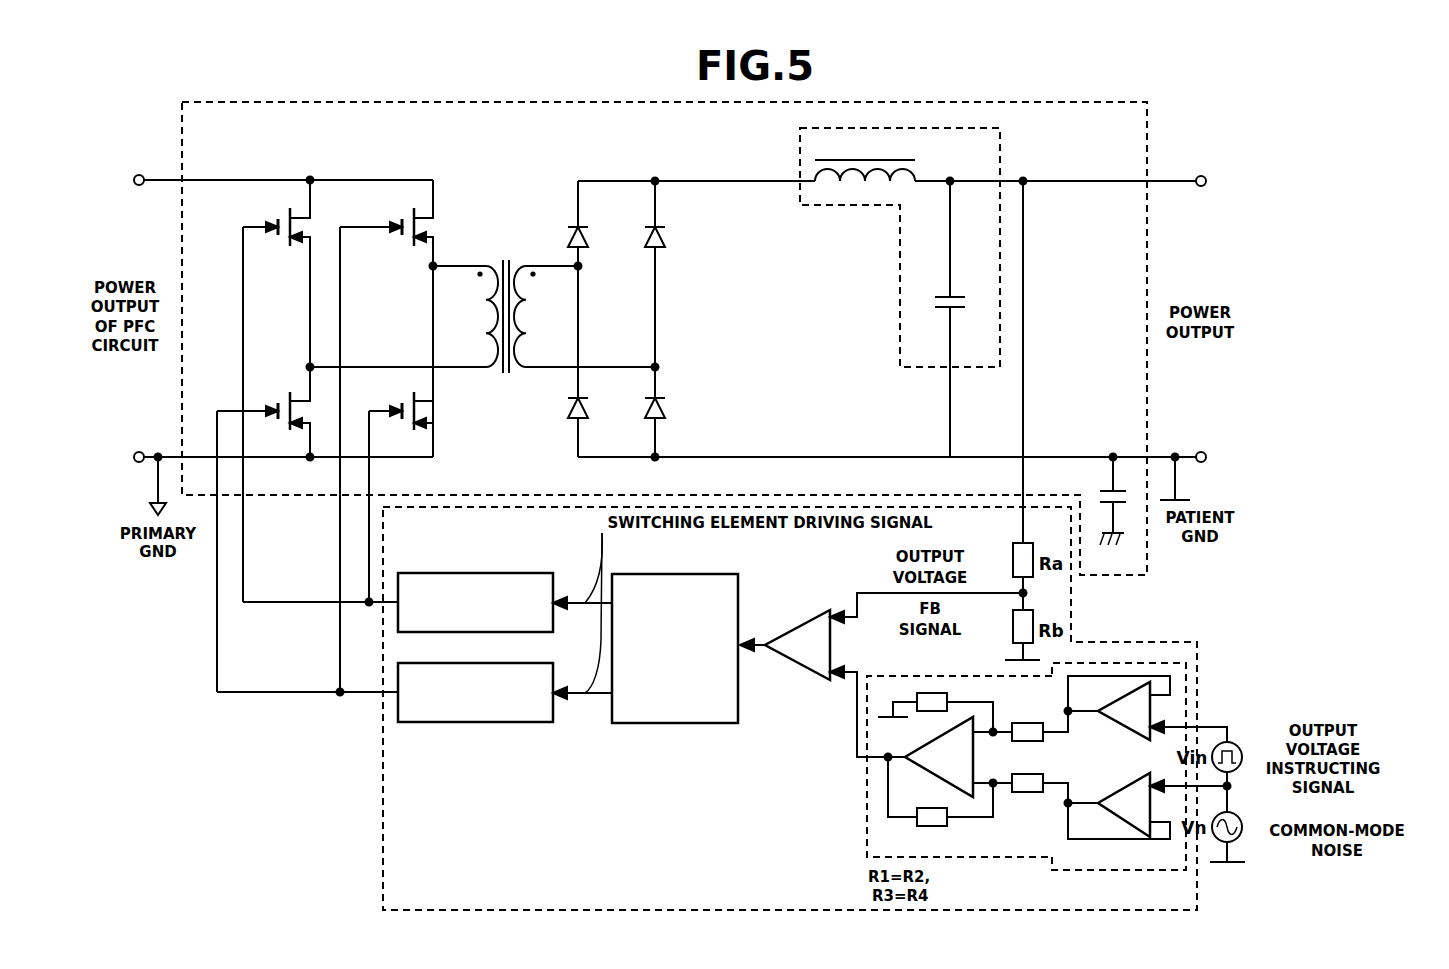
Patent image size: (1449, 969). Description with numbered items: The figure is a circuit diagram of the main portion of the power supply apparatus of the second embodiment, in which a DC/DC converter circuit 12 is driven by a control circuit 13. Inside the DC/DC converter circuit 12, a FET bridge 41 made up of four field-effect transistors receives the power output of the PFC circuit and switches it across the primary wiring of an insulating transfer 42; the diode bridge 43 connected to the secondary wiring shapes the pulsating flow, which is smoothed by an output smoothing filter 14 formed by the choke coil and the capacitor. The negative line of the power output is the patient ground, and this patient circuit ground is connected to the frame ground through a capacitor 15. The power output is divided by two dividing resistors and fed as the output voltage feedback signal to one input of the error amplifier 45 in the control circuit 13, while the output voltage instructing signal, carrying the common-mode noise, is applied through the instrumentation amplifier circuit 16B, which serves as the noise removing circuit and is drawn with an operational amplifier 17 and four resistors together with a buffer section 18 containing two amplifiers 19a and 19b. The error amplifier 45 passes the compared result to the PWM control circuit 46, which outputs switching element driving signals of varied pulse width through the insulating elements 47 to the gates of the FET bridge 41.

The DC/DC converter circuit 12 is at (1148, 146).
The control circuit 13 is at (382, 760).
The output smoothing filter 14 is at (900, 268).
The capacitor 15 is at (1108, 489).
The instrumentation amplifier circuit 16B is at (866, 780).
The operational amplifier 17 is at (976, 765).
The buffer amplifier circuit 18 is at (998, 821).
The buffer operational amplifier 19a is at (1120, 729).
The buffer operational amplifier 19b is at (1120, 788).
The FET bridge 41 is at (433, 168).
The insulating transfer 42 is at (510, 260).
The diode bridge 43 is at (619, 178).
The error amplifier 45 is at (800, 621).
The PWM control circuit 46 is at (677, 724).
The insulating element 47 is at (493, 574).